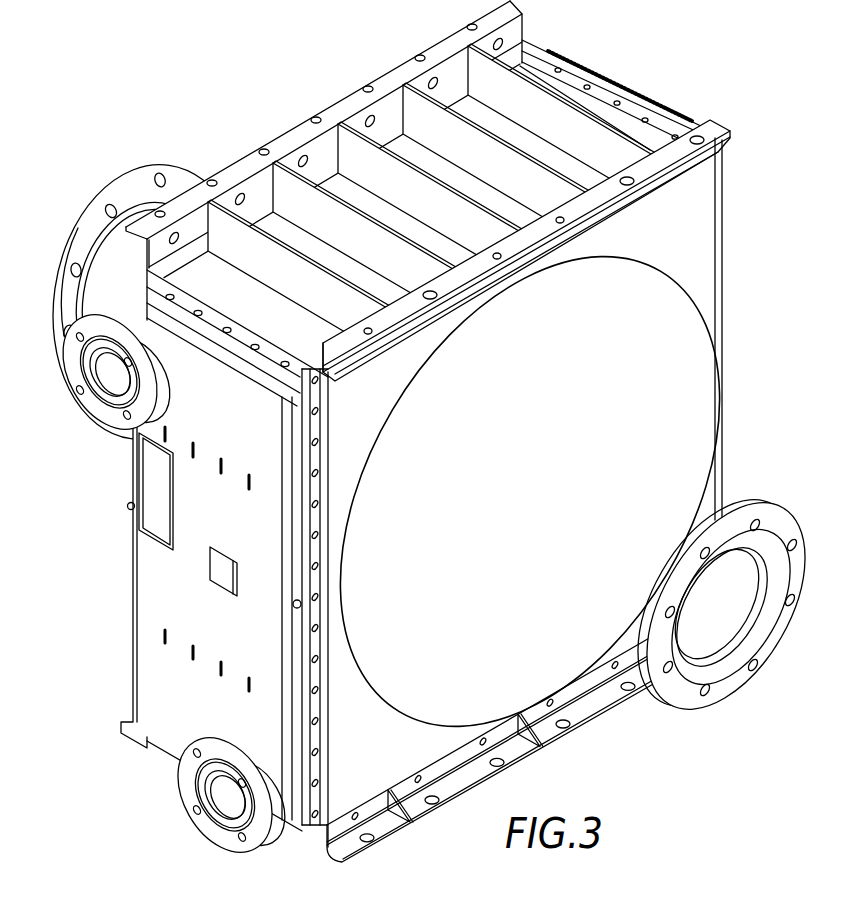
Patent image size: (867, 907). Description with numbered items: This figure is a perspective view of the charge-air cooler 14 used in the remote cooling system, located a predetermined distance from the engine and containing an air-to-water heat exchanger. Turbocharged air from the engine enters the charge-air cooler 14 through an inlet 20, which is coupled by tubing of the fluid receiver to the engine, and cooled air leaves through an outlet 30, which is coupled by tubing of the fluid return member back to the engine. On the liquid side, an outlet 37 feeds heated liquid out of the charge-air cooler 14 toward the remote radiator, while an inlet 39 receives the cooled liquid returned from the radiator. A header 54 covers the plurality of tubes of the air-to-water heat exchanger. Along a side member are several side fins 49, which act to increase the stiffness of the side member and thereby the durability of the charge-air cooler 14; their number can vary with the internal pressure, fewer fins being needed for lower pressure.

The charge-air cooler 14 is at (446, 432).
The inlet 20 is at (755, 622).
The outlet 30 is at (80, 214).
The outlet 37 is at (103, 370).
The inlet 39 is at (215, 790).
The side fins 49 is at (213, 206).
The header 54 is at (155, 572).